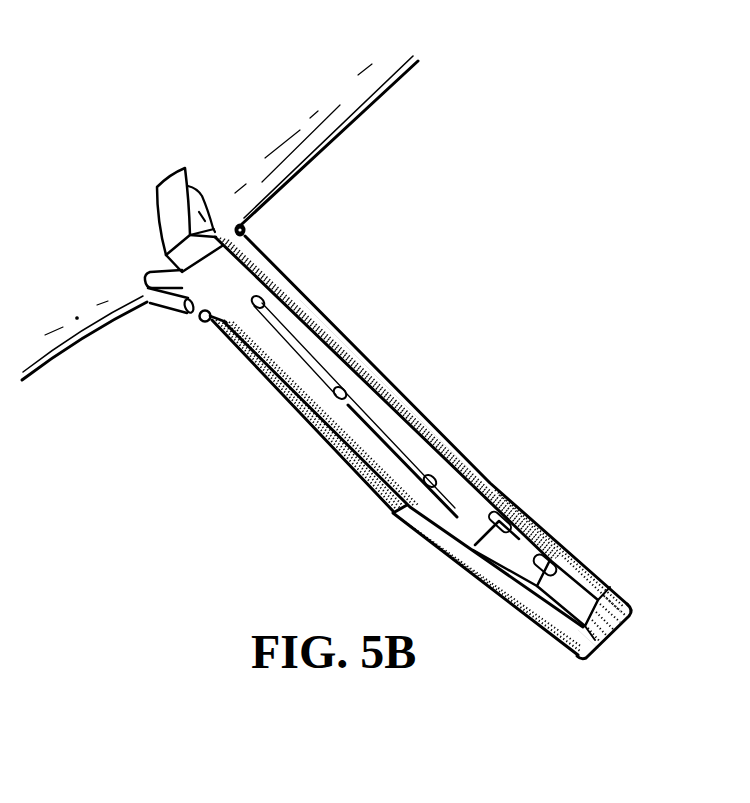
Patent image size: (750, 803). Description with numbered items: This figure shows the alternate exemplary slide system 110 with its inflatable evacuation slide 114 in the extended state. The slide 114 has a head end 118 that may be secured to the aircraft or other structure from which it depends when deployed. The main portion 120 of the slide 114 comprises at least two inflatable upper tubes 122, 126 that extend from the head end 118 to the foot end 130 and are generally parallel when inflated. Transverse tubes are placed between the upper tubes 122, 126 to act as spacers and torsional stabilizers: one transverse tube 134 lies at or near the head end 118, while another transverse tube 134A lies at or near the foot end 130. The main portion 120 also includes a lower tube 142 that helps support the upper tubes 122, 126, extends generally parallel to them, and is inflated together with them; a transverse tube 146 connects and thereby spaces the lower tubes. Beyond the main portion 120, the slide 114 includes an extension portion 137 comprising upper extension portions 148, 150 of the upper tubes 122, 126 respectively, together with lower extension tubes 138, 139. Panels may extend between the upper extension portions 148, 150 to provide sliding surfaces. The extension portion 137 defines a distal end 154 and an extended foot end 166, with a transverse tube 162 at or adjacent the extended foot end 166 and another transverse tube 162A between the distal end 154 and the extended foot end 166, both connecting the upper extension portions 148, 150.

The slide system 110 is at (458, 290).
The inflatable evacuation slide 114 is at (338, 298).
The head end 118 is at (124, 272).
The main portion 120 is at (323, 257).
The upper tube 122 is at (287, 370).
The upper tube 126 is at (363, 381).
The foot end 130 is at (4, 518).
The transverse tube 134 is at (150, 278).
The transverse tube 134A is at (0, 561).
The extension portion 137 is at (592, 514).
The lower extension tube 138 is at (440, 552).
The lower extension tube 139 is at (538, 546).
The lower tube 142 is at (267, 307).
The transverse tube 146 is at (207, 322).
The upper extension portion 148 is at (527, 620).
The upper extension portion 150 is at (580, 580).
The distal end 154 is at (482, 440).
The transverse tube 162 is at (606, 618).
The transverse tube 162A is at (510, 575).
The extended foot end 166 is at (605, 650).